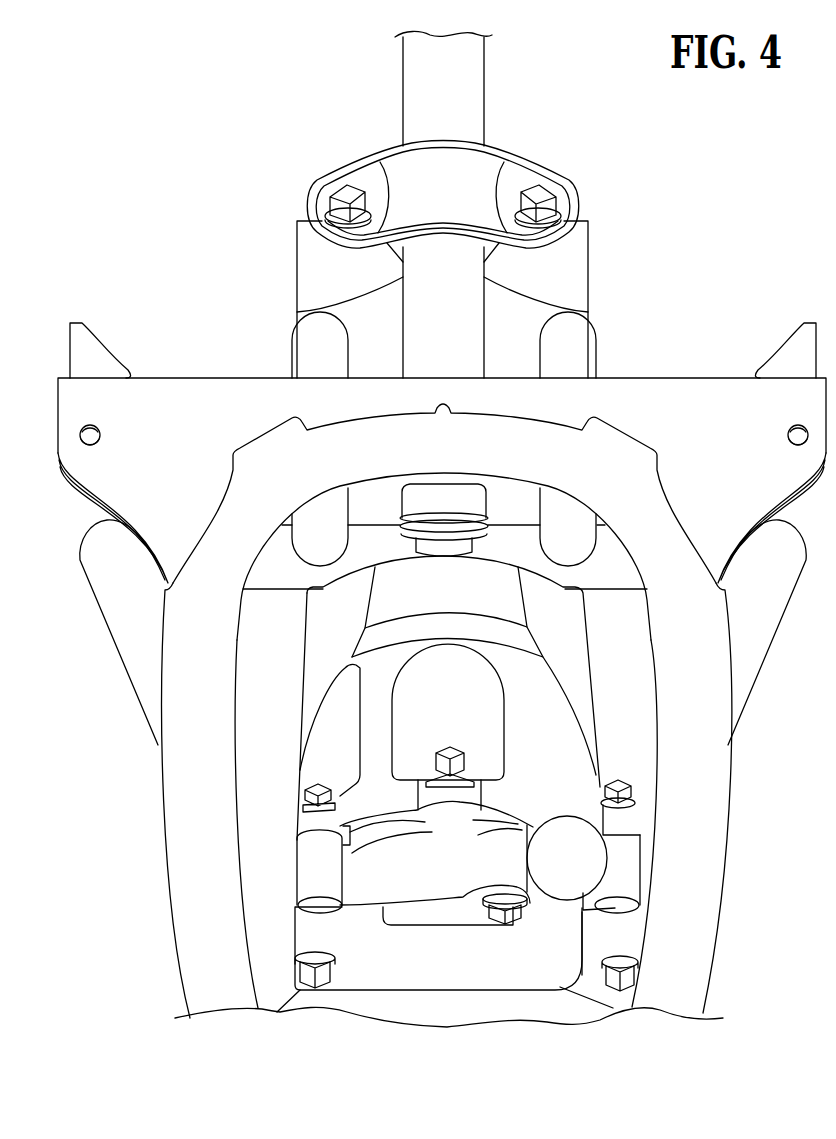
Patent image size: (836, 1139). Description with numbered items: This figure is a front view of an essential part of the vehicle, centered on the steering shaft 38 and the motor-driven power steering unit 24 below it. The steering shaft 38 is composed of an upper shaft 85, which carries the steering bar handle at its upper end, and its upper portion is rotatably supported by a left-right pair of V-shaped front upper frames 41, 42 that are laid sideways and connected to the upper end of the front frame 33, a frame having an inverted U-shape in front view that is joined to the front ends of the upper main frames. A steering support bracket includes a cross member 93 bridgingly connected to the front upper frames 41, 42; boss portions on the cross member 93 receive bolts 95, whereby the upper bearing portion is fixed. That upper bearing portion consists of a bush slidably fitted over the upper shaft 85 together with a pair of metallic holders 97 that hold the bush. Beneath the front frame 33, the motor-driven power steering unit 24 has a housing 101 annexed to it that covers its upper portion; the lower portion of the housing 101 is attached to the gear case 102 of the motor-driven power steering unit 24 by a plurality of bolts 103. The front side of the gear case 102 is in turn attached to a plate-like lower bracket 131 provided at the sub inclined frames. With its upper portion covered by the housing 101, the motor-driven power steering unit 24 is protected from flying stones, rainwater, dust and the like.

The steering shaft 38 is at (398, 68).
The upper shaft 85 is at (470, 97).
The metallic holder 97 is at (397, 167).
The bolt 95 is at (342, 199).
The cross member 93 is at (578, 265).
The front upper frame 41 is at (583, 347).
The front upper frame 42 is at (298, 345).
The front frame 33 is at (162, 666).
The housing 101 is at (345, 727).
The bolt 103 is at (314, 797).
The motor-driven power steering unit 24 is at (386, 952).
The gear case 102 is at (445, 975).
The lower bracket 131 is at (563, 1013).